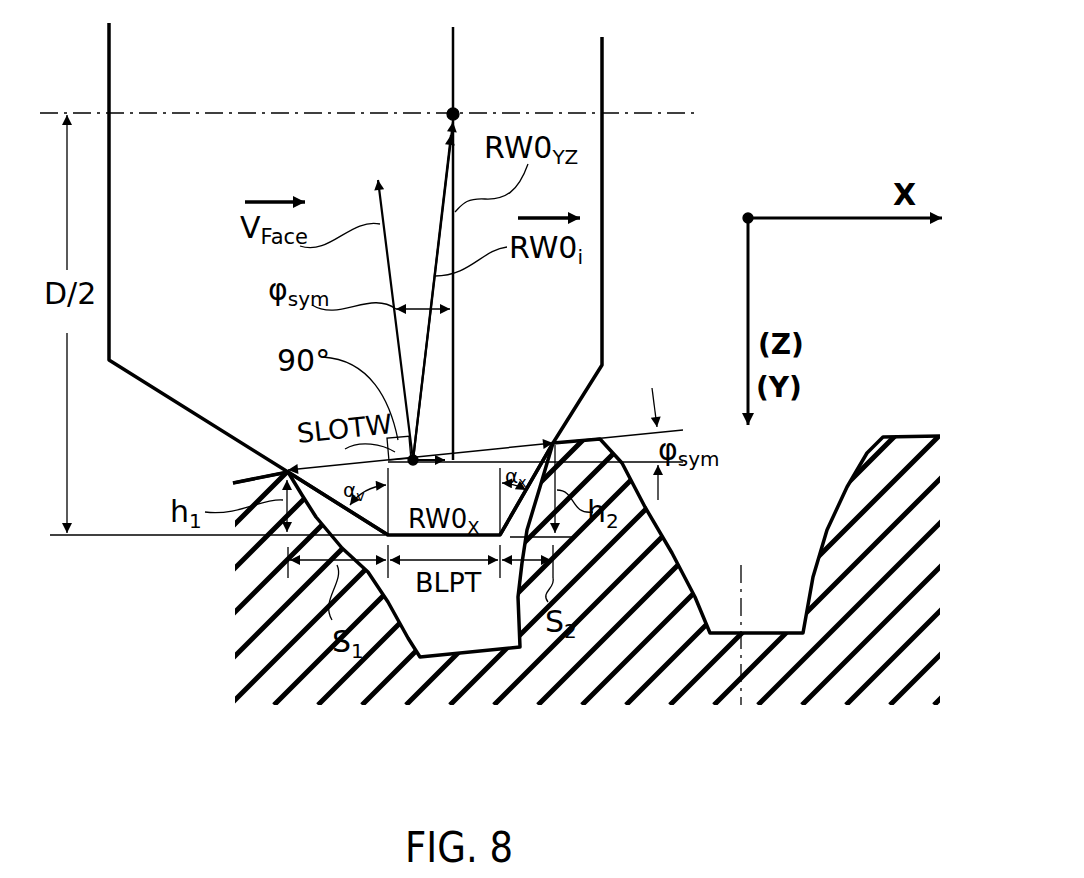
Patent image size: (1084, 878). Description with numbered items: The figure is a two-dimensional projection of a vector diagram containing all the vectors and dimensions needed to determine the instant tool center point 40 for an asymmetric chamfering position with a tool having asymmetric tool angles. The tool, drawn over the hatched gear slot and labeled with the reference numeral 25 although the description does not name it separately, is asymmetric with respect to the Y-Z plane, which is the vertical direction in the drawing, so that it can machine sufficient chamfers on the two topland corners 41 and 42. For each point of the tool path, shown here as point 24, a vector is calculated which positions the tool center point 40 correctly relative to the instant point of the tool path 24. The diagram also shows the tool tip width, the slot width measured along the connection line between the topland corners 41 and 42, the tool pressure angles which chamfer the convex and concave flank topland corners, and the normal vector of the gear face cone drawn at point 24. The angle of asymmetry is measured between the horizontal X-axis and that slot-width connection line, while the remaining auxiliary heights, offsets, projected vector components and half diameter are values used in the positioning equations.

The cutting blade 25 is at (145, 87).
The tool center point 40 is at (460, 111).
The point of the tool path 24 is at (420, 452).
The topland corner 41 is at (288, 462).
The topland corner 42 is at (553, 443).